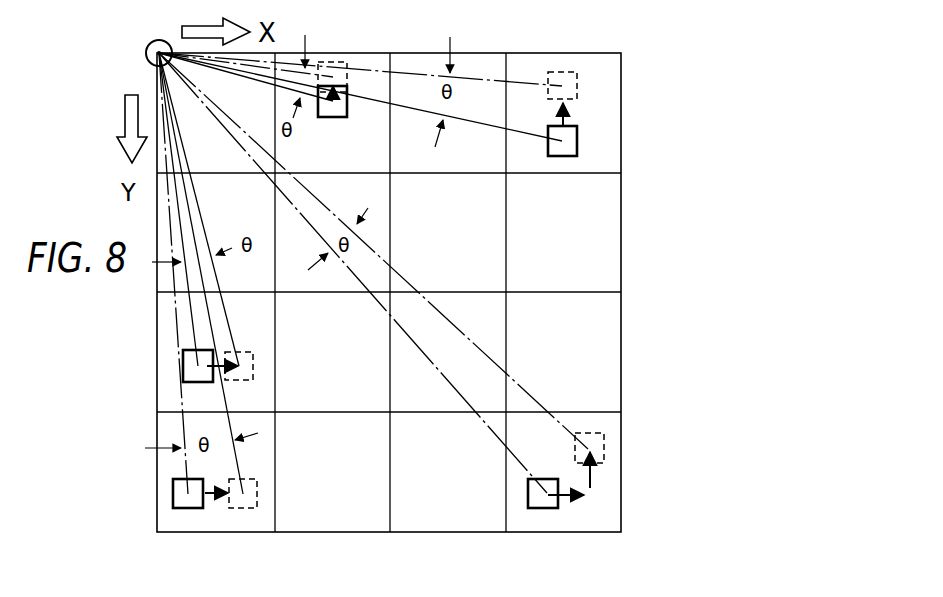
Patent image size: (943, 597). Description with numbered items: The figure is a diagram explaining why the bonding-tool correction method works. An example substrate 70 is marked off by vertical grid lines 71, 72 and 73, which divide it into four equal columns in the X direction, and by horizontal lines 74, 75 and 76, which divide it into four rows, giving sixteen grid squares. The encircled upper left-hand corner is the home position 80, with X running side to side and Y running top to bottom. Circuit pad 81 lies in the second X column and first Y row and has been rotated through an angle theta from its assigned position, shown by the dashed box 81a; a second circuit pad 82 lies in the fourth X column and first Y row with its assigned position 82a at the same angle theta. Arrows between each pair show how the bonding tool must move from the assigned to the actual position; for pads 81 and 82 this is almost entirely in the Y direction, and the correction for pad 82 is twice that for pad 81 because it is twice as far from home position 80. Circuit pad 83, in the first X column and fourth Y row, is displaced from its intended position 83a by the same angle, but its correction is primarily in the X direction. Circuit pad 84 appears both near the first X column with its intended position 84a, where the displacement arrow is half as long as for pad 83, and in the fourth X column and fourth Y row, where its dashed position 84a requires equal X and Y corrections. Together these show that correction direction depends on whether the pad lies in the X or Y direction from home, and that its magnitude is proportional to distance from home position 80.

The substrate 70 is at (621, 262).
The grid line 71 is at (276, 380).
The grid line 72 is at (389, 380).
The grid line 73 is at (506, 322).
The horizontal line 74 is at (457, 173).
The horizontal line 75 is at (452, 292).
The horizontal line 76 is at (443, 414).
The home position 80 is at (146, 52).
The circuit pad 81 is at (333, 117).
The dashed box 81a is at (340, 62).
The circuit pad 82 is at (578, 138).
The assigned position 82a is at (578, 87).
The circuit pad 83 is at (186, 508).
The intended position 83a is at (245, 508).
The circuit pad 84 is at (183, 368).
The intended position box 84a is at (247, 350).